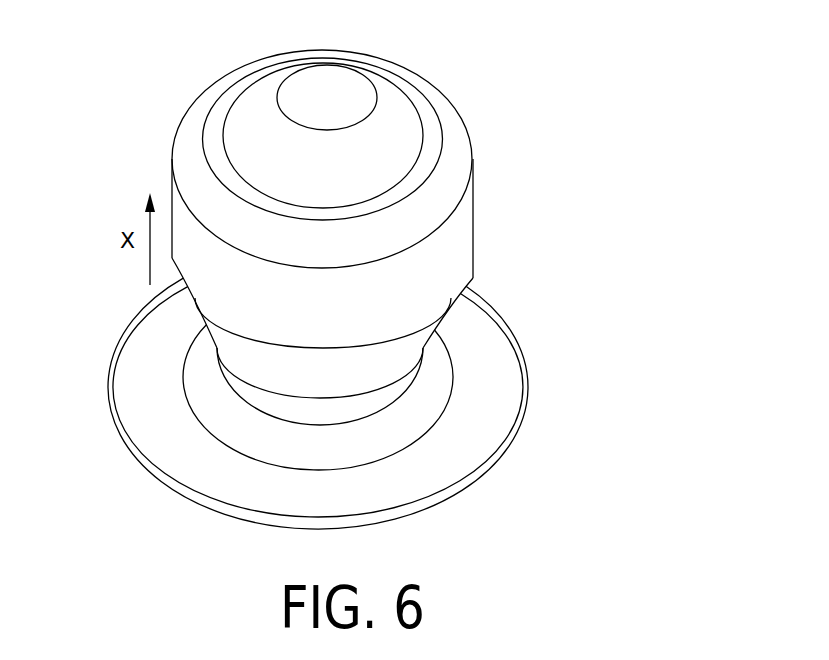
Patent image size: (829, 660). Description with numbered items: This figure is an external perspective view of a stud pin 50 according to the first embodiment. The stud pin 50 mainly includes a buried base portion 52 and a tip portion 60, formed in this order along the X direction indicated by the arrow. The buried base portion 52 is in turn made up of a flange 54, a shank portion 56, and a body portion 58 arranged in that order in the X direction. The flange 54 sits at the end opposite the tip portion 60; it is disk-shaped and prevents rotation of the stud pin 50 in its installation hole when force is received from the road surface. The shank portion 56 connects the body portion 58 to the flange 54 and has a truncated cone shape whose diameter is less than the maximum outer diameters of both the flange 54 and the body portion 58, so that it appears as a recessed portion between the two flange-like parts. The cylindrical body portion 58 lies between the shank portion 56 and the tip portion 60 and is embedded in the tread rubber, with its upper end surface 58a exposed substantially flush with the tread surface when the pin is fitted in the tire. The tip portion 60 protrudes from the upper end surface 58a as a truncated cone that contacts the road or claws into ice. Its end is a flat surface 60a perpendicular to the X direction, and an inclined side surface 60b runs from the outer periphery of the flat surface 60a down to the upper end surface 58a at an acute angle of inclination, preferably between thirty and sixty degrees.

The stud pin 50 is at (598, 79).
The buried base portion 52 is at (627, 245).
The flange 54 is at (492, 426).
The shank portion 56 is at (413, 347).
The body portion 58 is at (443, 265).
The upper end surface 58a is at (420, 165).
The tip portion 60 is at (288, 75).
The flat surface 60a is at (342, 95).
The inclined side surface 60b is at (405, 118).